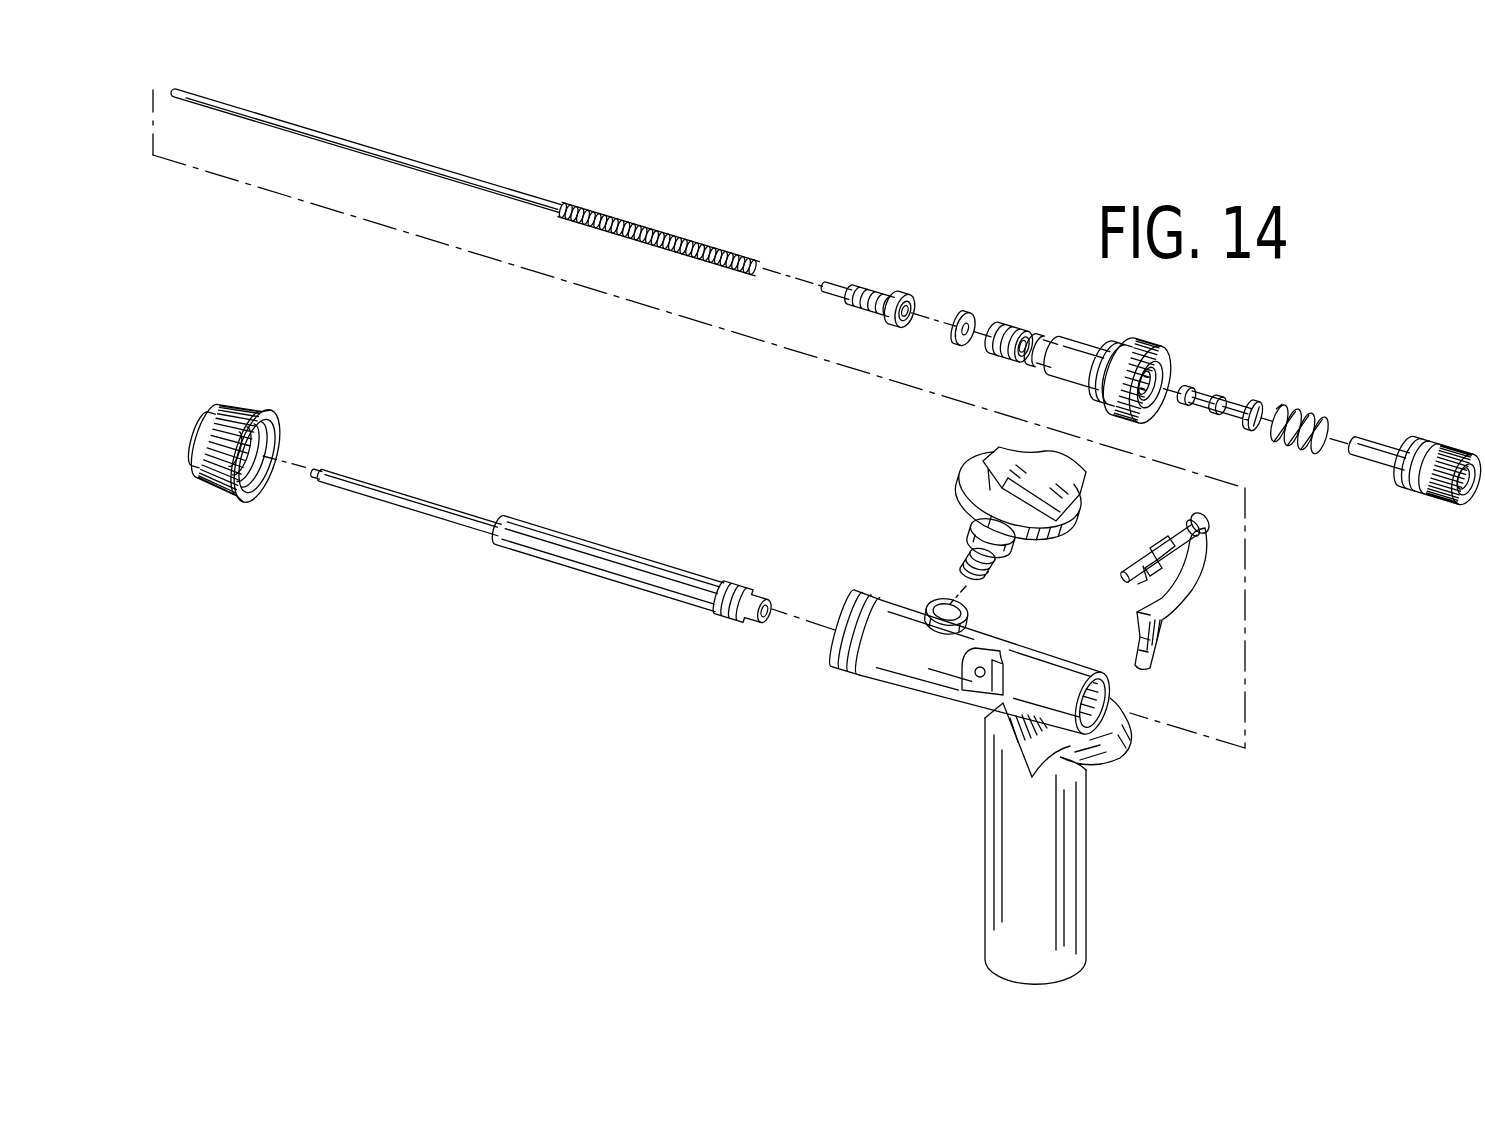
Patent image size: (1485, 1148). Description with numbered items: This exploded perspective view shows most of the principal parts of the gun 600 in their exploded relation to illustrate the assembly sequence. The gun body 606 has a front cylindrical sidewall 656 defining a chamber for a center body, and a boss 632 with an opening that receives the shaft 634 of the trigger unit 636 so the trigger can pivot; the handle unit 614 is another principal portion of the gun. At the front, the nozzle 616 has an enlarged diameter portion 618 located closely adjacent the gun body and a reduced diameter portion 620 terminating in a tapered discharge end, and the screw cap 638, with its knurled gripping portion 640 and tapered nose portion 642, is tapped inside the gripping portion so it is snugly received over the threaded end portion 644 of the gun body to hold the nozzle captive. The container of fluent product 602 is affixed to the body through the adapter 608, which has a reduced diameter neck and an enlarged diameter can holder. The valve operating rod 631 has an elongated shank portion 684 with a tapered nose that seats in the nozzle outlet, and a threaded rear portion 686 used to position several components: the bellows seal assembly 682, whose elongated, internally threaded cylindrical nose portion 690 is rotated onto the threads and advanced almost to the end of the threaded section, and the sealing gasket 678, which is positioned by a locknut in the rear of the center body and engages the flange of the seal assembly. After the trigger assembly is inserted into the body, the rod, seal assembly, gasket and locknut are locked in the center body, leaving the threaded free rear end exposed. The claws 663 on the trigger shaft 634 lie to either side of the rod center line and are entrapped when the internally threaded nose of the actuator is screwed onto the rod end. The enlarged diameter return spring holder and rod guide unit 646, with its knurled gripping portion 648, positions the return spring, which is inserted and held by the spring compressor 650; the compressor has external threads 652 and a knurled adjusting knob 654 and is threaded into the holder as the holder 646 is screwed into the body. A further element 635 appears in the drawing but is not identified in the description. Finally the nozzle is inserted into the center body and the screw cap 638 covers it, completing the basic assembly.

The gun 600 is at (961, 781).
The container of fluent product 602 is at (1148, 502).
The gun body 606 is at (1151, 718).
The adapter 608 is at (944, 491).
The handle unit 614 is at (1048, 845).
The nozzle 616 is at (651, 546).
The enlarged diameter portion 618 is at (680, 595).
The reduced diameter portion 620 is at (426, 508).
The valve operating rod 631 is at (578, 192).
The boss 632 is at (995, 664).
The shaft 634 is at (1180, 545).
The pivot block 635 is at (975, 668).
The trigger unit 636 is at (1206, 634).
The screw cap 638 is at (257, 508).
The knurled gripping portion 640 is at (258, 422).
The tapered nose portion 642 is at (210, 418).
The threaded end portion 644 is at (878, 600).
The return spring holder and rod guide unit 646 is at (1190, 314).
The knurled gripping portion 648 is at (1134, 352).
The spring compressor 650 is at (1462, 452).
The external threads 652 is at (1423, 478).
The adjusting knob 654 is at (1446, 496).
The front cylindrical sidewall 656 is at (906, 673).
The claws 663 is at (1150, 577).
The sealing gasket 678 is at (975, 318).
The bellows seal assembly 682 is at (920, 240).
The elongated shank portion 684 is at (436, 170).
The threaded rear portion 686 is at (688, 242).
The internally threaded cylindrical nose portion 690 is at (840, 292).